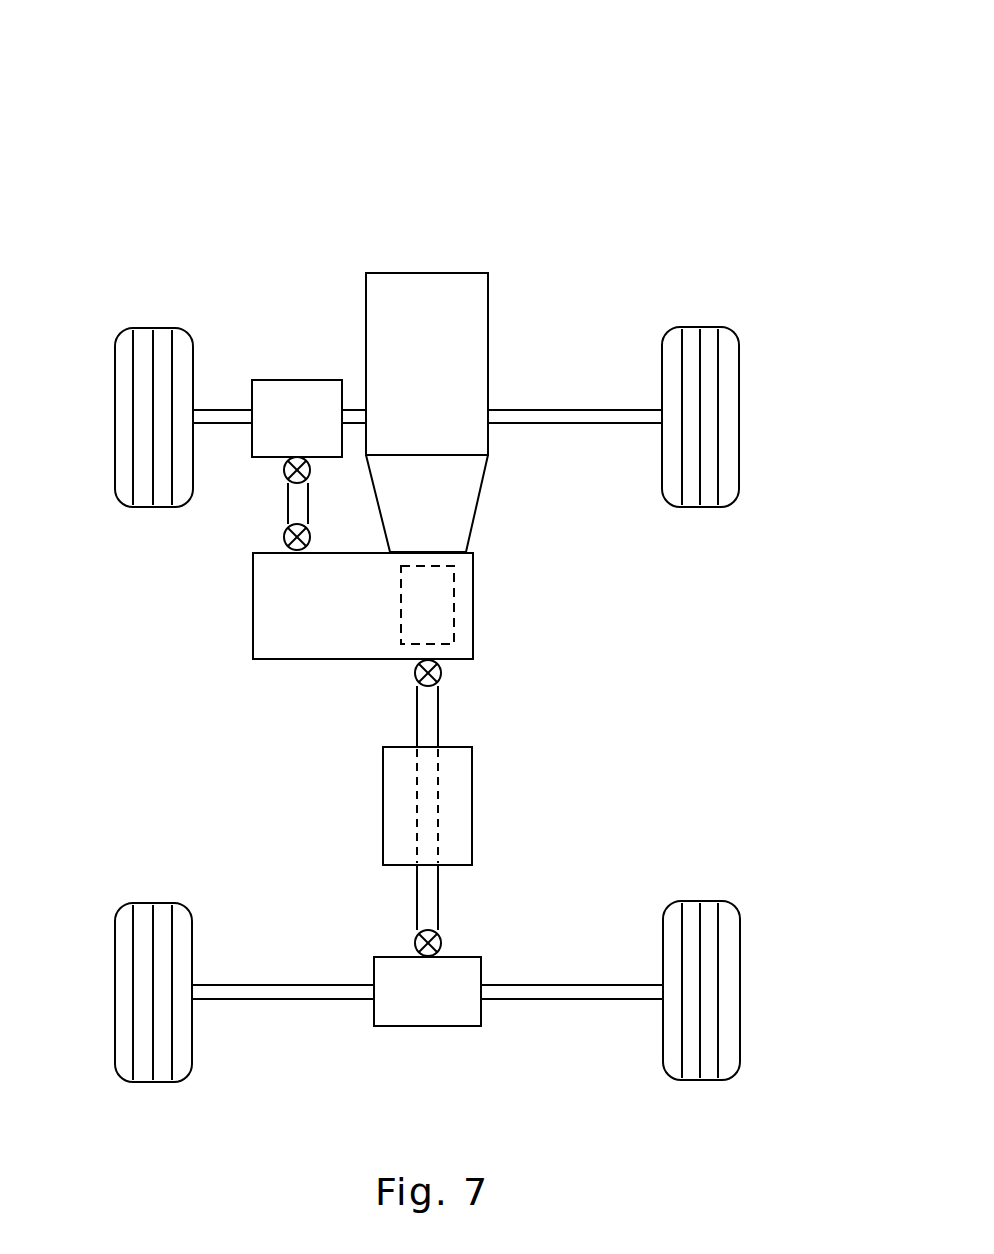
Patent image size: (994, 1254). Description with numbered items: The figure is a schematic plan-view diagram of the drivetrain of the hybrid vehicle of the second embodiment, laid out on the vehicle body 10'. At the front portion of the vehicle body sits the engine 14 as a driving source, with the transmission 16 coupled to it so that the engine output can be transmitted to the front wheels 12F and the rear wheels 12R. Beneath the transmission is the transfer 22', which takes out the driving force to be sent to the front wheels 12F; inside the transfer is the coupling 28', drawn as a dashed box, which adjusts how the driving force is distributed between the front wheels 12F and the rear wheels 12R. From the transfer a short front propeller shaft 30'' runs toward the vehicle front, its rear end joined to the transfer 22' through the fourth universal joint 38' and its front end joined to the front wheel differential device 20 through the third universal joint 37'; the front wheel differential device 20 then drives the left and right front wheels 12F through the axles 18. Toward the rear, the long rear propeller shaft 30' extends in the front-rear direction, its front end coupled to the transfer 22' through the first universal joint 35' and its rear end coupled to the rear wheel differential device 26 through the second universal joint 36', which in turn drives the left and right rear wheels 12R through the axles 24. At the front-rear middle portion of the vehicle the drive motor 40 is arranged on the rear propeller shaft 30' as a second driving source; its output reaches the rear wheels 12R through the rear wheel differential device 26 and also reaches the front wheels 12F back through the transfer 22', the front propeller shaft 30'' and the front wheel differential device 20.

The vehicle body 10' is at (436, 548).
The front wheels 12F is at (160, 328).
The rear wheels 12R is at (160, 903).
The engine 14 is at (427, 364).
The transmission 16 is at (427, 503).
The axles 18 is at (218, 410).
The front wheel differential device 20 is at (297, 418).
The transfer 22' is at (409, 608).
The axles 24 is at (277, 1000).
The rear wheel differential device 26 is at (427, 991).
The coupling 28' is at (474, 605).
The rear propeller shaft 30' is at (385, 808).
The front propeller shaft 30'' is at (254, 505).
The first universal joint 35' is at (384, 677).
The second universal joint 36' is at (470, 939).
The third universal joint 37' is at (256, 474).
The fourth universal joint 38' is at (334, 533).
The drive motor 40 is at (472, 820).